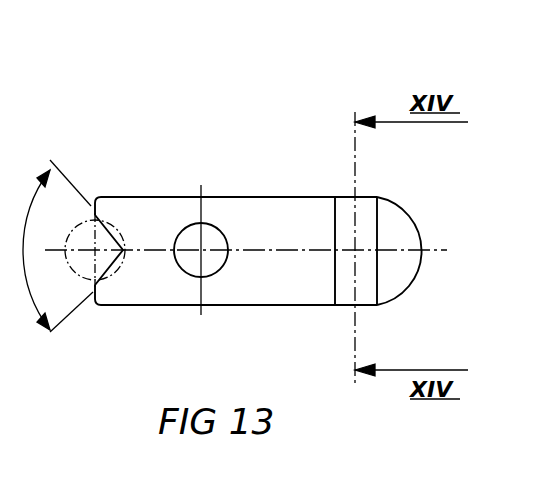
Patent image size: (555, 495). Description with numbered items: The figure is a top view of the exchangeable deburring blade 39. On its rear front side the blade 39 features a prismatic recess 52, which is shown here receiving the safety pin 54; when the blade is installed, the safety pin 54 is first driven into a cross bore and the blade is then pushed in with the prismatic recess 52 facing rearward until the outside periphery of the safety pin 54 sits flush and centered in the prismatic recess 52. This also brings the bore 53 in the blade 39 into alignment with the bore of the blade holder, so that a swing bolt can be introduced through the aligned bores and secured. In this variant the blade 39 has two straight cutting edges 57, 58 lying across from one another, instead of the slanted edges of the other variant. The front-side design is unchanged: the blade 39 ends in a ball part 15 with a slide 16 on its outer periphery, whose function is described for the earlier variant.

The blade 39 is at (288, 143).
The prismatic recess 52 is at (116, 237).
The bore 53 is at (211, 242).
The safety pin 54 is at (82, 225).
The cutting edge 58 is at (365, 197).
The cutting edge 57 is at (365, 306).
The slide 16 is at (411, 218).
The ball part 15 is at (407, 261).